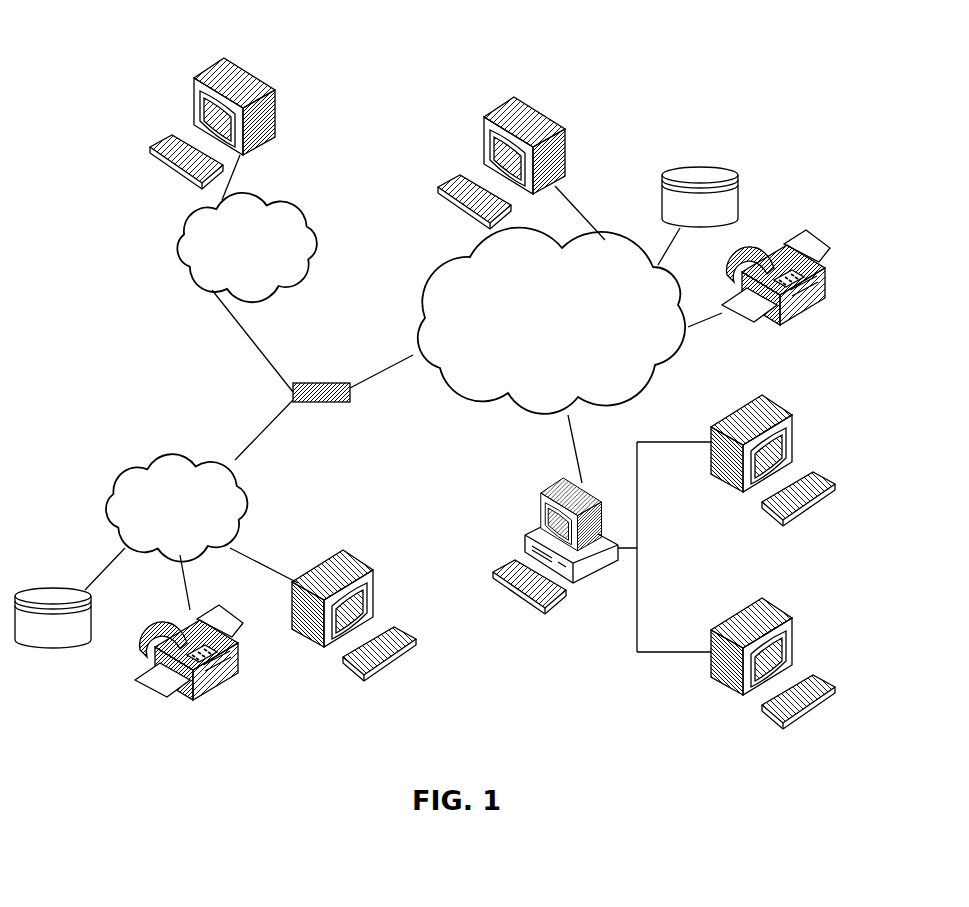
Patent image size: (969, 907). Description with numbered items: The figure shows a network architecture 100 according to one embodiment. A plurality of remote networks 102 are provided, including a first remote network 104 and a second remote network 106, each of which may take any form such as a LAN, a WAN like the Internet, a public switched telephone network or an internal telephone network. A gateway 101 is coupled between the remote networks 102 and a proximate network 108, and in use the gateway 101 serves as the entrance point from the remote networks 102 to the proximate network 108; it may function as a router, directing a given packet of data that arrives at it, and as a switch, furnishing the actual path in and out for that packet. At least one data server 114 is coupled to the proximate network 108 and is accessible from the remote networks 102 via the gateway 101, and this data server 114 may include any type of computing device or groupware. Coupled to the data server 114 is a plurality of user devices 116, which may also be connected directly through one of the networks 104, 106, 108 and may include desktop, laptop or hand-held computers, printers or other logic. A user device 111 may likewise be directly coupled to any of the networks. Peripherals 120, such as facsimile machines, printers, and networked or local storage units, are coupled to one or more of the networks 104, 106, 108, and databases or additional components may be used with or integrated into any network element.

The architecture 100 is at (122, 38).
The gateway 101 is at (306, 383).
The remote networks 102 is at (150, 310).
The first remote network 104 is at (112, 484).
The second remote network 106 is at (313, 222).
The proximate network 108 is at (650, 385).
The user device 111 is at (563, 130).
The data server 114 is at (540, 504).
The user devices 116 is at (275, 97).
The peripheral 120 is at (767, 164).